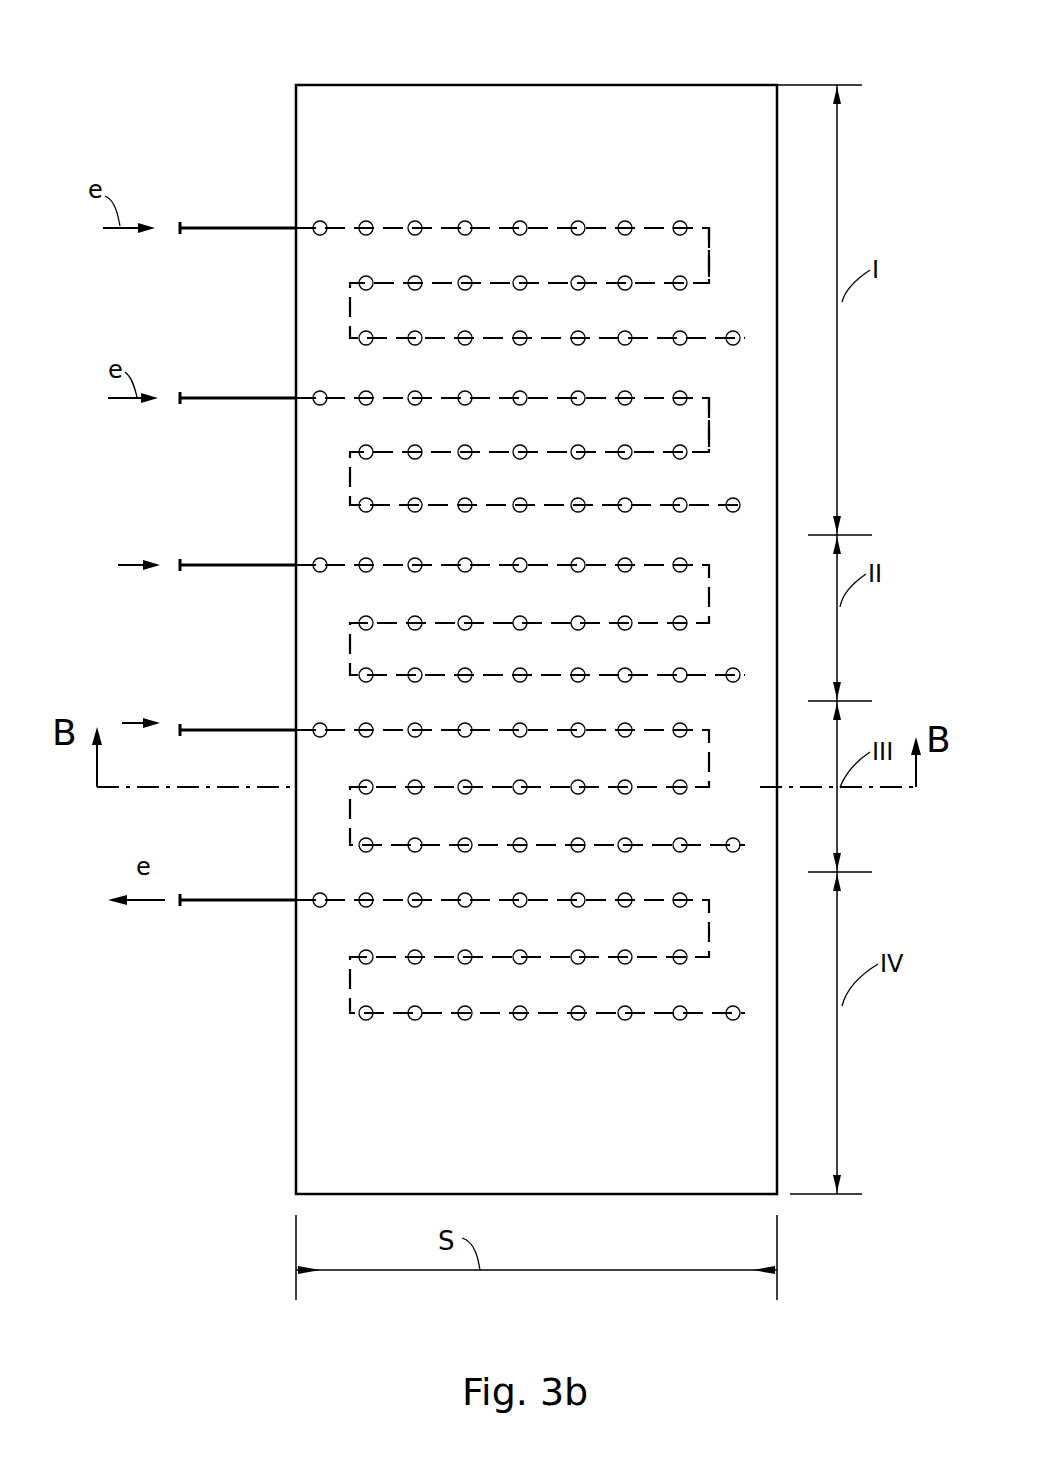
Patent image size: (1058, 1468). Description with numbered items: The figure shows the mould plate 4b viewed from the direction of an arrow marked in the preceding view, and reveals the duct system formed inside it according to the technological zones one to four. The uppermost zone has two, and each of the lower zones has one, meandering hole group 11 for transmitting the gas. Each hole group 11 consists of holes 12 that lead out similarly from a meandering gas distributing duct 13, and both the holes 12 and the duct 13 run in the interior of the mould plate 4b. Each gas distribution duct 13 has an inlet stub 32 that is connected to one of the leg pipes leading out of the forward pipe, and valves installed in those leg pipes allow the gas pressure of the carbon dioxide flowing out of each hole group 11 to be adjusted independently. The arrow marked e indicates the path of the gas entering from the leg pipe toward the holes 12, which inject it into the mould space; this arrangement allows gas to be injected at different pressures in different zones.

The mould plate 4b is at (672, 160).
The meandering hole group 11 is at (567, 195).
The holes 12 is at (360, 222).
The gas distributing duct 13 is at (714, 256).
The inlet stub 32 is at (234, 226).